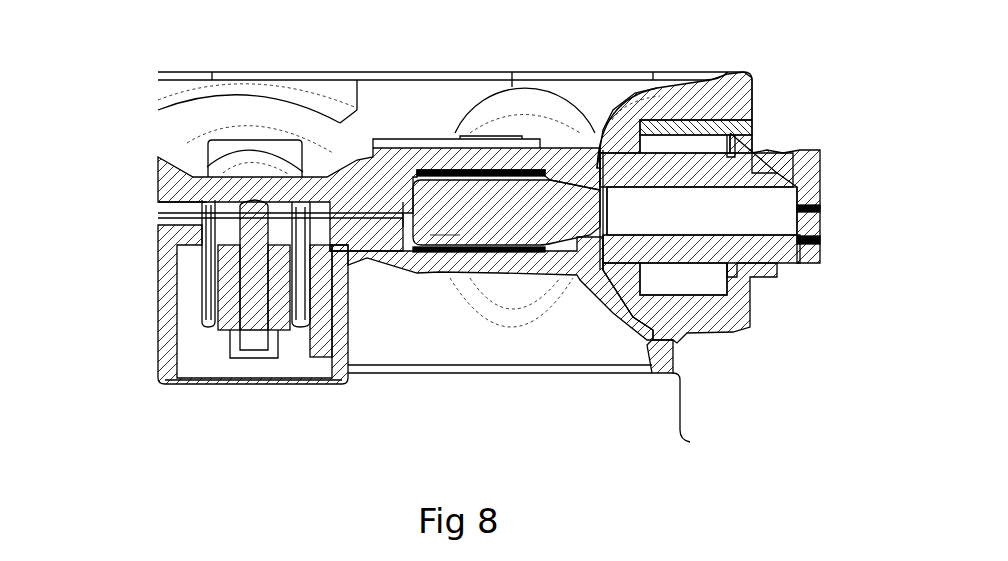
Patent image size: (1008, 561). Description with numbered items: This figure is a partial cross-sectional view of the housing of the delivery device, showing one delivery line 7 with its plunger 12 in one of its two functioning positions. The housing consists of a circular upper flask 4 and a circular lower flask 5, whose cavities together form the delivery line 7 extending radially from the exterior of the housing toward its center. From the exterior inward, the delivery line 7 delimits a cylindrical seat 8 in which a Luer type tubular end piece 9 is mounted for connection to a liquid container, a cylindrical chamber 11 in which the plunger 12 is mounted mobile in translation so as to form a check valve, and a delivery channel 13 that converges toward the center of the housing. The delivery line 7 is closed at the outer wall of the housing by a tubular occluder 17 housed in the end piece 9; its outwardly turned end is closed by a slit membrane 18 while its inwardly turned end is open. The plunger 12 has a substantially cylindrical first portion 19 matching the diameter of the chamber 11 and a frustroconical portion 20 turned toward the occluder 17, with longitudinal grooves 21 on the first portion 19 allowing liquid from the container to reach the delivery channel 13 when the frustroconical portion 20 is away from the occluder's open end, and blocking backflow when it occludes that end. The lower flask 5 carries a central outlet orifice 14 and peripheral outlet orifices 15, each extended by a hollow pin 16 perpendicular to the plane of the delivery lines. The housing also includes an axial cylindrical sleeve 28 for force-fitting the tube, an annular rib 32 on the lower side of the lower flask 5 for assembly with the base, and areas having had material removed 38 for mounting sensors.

The upper flask 4 is at (750, 71).
The lower flask 5 is at (750, 323).
The delivery line 7 is at (575, 177).
The cylindrical seat 8 is at (711, 300).
The Luer type tubular end piece 9 is at (807, 153).
The cylindrical chamber 11 is at (593, 252).
The plunger 12 is at (496, 188).
The delivery channel 13 is at (340, 203).
The central outlet orifice 14 is at (207, 245).
The peripheral outlet orifice 15 is at (200, 226).
The hollow pin 16 is at (237, 357).
The occluder 17 is at (763, 247).
The slit membrane 18 is at (813, 213).
The first portion 19 is at (453, 237).
The frustroconical portion 20 is at (587, 188).
The longitudinal grooves 21 is at (438, 188).
The axial cylindrical sleeve 28 is at (163, 368).
The annular rib 32 is at (534, 399).
The areas having had material removed 38 is at (450, 178).